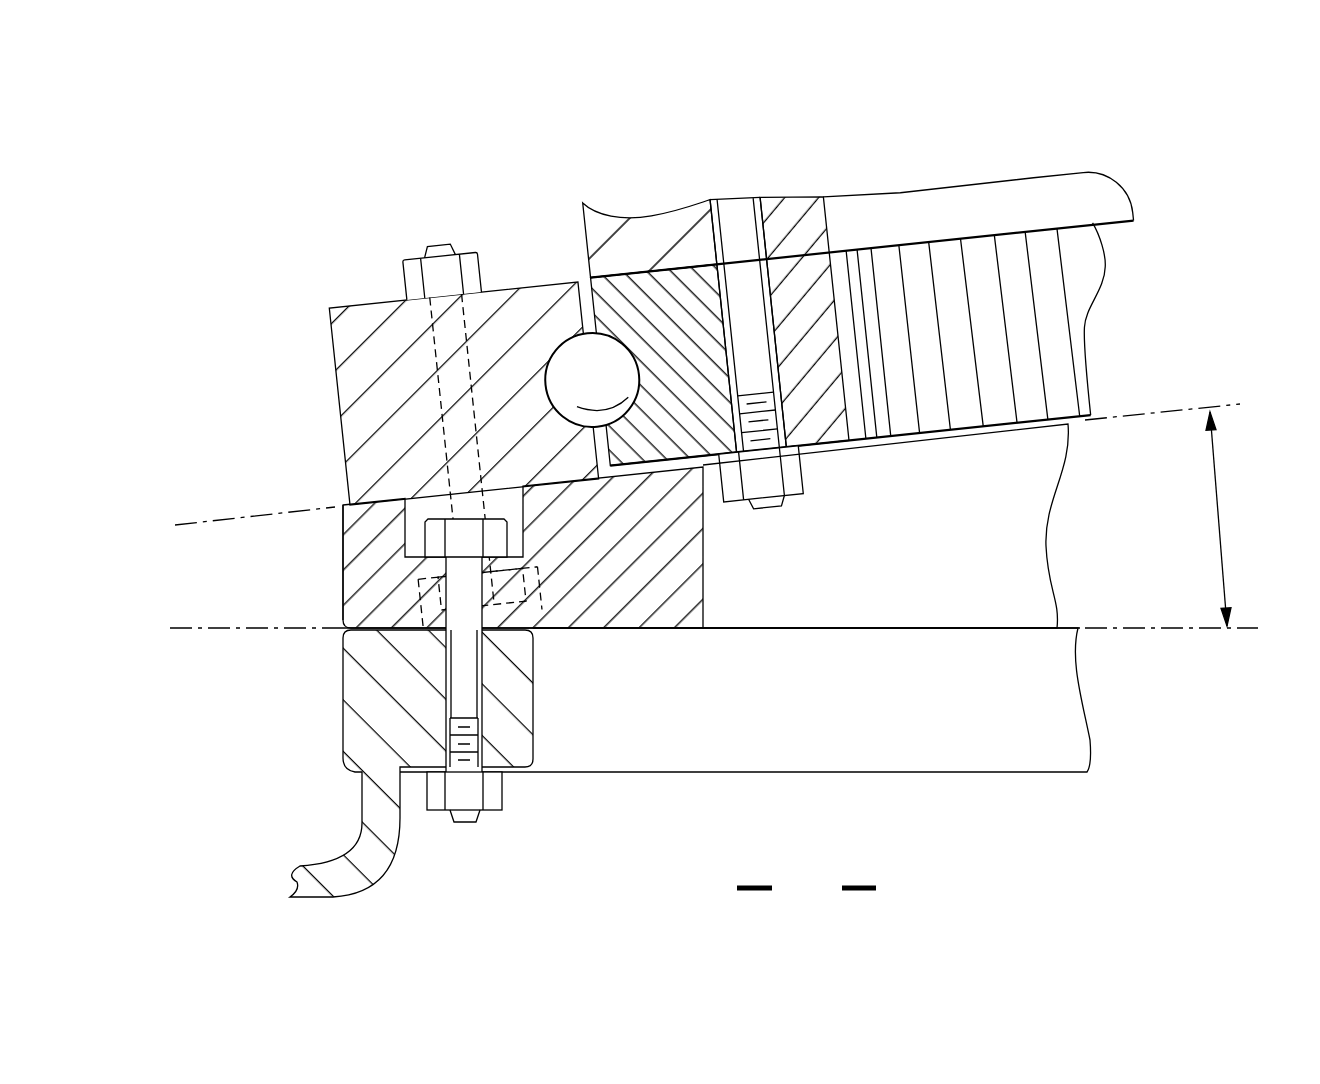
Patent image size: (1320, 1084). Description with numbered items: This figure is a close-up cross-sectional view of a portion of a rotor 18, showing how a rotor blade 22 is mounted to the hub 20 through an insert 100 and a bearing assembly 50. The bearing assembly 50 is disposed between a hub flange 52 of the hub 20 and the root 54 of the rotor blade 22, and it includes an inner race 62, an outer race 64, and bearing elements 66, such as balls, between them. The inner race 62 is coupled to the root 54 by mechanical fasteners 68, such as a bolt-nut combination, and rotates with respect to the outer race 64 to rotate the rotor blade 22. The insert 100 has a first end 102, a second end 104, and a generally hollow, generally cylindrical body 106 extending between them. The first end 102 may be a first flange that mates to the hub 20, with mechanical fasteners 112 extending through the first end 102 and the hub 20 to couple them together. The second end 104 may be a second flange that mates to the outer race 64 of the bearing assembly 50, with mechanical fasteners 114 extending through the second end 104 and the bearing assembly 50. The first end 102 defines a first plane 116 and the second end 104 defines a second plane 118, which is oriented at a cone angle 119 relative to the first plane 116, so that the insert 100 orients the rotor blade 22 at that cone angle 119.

The rotor 18 is at (230, 264).
The hub 20 is at (325, 730).
The rotor blade 22 is at (818, 172).
The bearing assembly 50 is at (320, 388).
The hub flange 52 is at (345, 670).
The root 54 is at (630, 287).
The inner race 62 is at (670, 278).
The outer race 64 is at (372, 320).
The bearing elements 66 is at (587, 362).
The mechanical fasteners 68 is at (710, 229).
The insert 100 is at (322, 541).
The first end 102 is at (343, 682).
The second end 104 is at (390, 500).
The body 106 is at (332, 528).
The mechanical fasteners 112 is at (484, 678).
The mechanical fasteners 114 is at (422, 371).
The first plane 116 is at (1150, 630).
The second plane 118 is at (1148, 407).
The cone angle 119 is at (1222, 497).